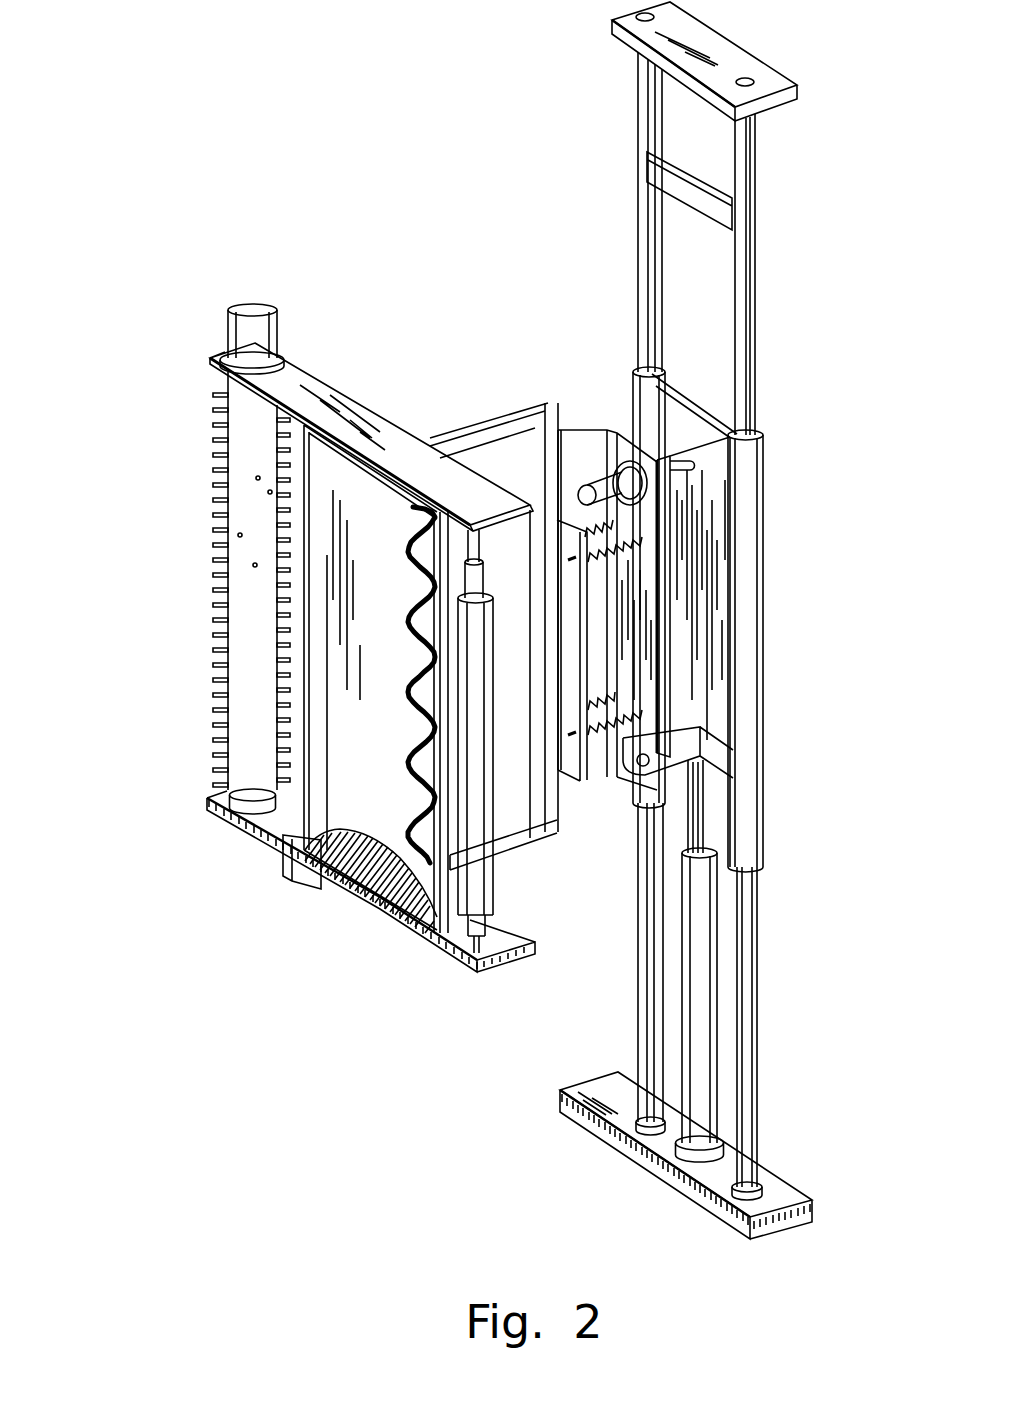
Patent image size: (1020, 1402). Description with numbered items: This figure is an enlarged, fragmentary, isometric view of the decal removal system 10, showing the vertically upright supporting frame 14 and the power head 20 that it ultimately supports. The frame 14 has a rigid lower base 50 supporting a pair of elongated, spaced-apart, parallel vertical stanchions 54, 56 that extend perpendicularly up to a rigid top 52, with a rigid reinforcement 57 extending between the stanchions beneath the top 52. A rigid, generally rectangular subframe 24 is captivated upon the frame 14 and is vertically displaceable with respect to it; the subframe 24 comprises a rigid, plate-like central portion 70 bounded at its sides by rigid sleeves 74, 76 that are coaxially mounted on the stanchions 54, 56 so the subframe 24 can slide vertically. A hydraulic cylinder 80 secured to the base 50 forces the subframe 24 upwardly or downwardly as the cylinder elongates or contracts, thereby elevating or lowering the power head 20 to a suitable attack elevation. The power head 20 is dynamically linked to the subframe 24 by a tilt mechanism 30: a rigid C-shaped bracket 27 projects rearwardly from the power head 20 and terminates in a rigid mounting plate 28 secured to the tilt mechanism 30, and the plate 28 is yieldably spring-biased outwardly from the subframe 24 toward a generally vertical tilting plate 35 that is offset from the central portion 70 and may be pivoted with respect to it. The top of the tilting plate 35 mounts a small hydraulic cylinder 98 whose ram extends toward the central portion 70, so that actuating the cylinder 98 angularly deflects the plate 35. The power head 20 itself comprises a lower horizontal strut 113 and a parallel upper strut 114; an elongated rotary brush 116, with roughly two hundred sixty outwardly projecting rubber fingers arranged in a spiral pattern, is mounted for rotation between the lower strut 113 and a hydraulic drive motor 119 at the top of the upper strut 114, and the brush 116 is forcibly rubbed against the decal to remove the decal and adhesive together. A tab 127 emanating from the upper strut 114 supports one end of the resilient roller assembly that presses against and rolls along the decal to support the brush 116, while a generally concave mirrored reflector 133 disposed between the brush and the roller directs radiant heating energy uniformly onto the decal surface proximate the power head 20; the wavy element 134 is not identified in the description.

The decal removal system 10 is at (412, 287).
The supporting frame 14 is at (778, 1000).
The power head 20 is at (185, 672).
The subframe 24 is at (725, 635).
The C-shaped bracket 27 is at (490, 425).
The mounting plate 28 is at (574, 785).
The tilt mechanism 30 is at (650, 600).
The tilting plate 35 is at (608, 440).
The base 50 is at (780, 1195).
The top 52 is at (725, 45).
The stanchion 54 is at (660, 240).
The stanchion 56 is at (750, 260).
The reinforcement 57 is at (655, 178).
The central portion 70 is at (680, 418).
The sleeve 74 is at (638, 392).
The sleeve 76 is at (760, 467).
The hydraulic cylinder 80 is at (695, 1053).
The small hydraulic cylinder 98 is at (590, 472).
The lower strut 113 is at (505, 943).
The upper strut 114 is at (310, 380).
The rotary brush 116 is at (240, 570).
The hydraulic drive motor 119 is at (230, 318).
The tab 127 is at (485, 877).
The mirrored reflector 133 is at (300, 840).
The wavy guide 134 is at (420, 828).